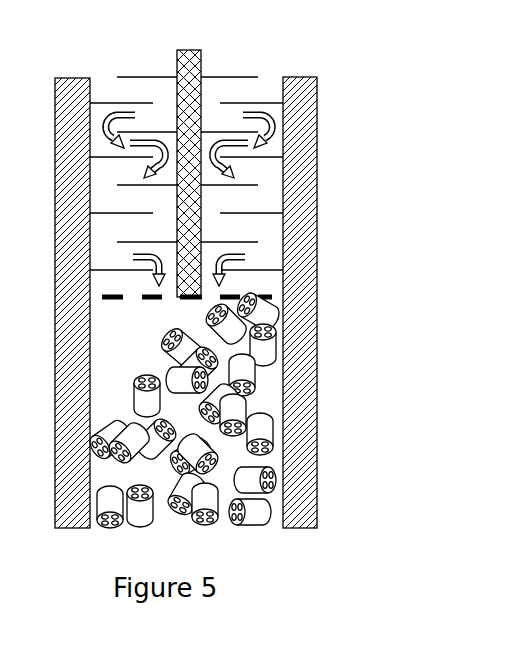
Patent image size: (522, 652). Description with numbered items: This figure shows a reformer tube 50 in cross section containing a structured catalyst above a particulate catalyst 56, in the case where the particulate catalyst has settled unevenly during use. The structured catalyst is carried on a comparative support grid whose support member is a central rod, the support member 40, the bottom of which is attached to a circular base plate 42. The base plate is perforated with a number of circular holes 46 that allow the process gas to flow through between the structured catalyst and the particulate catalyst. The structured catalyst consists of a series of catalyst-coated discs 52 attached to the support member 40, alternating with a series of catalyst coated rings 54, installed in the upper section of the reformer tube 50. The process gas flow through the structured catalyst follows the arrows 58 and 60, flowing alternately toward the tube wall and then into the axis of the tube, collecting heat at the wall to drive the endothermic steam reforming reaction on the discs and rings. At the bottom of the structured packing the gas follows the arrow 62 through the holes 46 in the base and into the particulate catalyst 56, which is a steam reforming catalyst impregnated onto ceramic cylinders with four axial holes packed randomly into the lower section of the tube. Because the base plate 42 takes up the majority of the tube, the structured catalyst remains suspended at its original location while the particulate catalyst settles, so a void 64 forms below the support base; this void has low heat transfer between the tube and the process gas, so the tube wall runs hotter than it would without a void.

The support member 40 is at (200, 60).
The base plate 42 is at (92, 296).
The holes 46 is at (253, 295).
The reformer tube 50 is at (317, 150).
The catalyst-coated discs 52 is at (133, 77).
The catalyst coated rings 54 is at (110, 103).
The particulate catalyst 56 is at (100, 440).
The arrows 58 is at (103, 130).
The arrows 60 is at (152, 165).
The arrow 62 is at (135, 258).
The void 64 is at (128, 346).